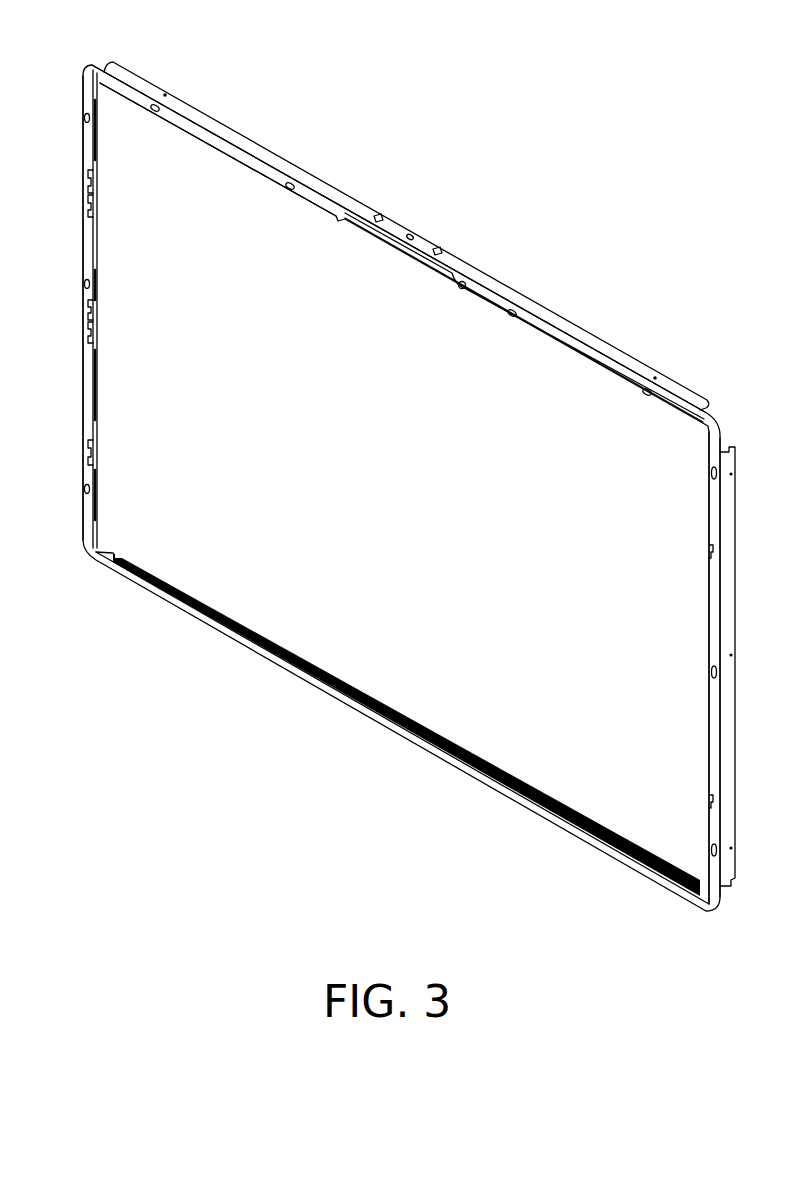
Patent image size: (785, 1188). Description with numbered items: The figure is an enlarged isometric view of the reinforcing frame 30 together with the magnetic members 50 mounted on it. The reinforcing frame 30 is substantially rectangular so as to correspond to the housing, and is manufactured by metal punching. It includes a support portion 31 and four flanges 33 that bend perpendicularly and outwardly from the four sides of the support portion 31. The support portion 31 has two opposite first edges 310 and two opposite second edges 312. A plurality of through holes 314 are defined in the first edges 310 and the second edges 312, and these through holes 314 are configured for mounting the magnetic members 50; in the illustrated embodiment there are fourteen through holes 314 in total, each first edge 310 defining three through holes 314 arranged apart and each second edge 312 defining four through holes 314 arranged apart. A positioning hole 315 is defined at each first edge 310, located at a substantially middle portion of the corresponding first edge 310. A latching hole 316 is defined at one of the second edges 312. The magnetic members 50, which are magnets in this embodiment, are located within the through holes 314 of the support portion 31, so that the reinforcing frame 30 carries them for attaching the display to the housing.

The reinforcing frame 30 is at (241, 32).
The support portion 31 is at (190, 125).
The flanges 33 is at (147, 85).
The first edges 310 is at (84, 405).
The second edges 312 is at (227, 147).
The through holes 314 is at (712, 466).
The positioning hole 315 is at (87, 312).
The latching hole 316 is at (465, 283).
The magnetic members 50 is at (709, 473).